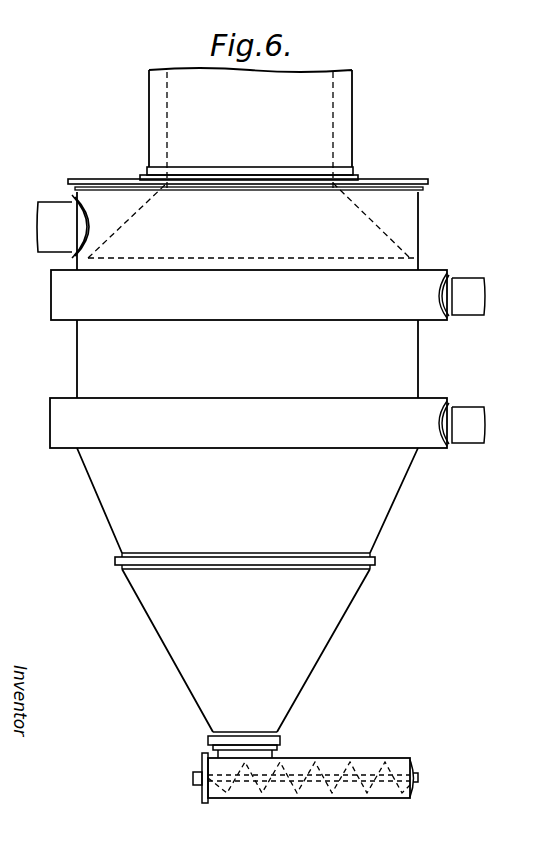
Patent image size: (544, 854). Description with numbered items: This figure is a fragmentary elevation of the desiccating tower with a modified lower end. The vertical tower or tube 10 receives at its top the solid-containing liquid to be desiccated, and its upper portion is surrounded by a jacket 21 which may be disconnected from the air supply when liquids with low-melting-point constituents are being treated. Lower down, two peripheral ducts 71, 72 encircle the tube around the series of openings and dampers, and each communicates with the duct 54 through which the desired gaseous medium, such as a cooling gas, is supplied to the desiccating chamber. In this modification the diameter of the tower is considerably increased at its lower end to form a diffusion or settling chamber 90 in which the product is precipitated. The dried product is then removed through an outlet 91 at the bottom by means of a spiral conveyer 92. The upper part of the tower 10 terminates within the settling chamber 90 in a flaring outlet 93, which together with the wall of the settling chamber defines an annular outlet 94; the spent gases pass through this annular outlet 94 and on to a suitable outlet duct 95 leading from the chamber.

The tower or tube 10 is at (300, 127).
The jacket 21 is at (337, 155).
The duct 54 is at (462, 297).
The peripheral duct 71 is at (63, 296).
The peripheral duct 72 is at (62, 423).
The diffusion or settling chamber 90 is at (408, 382).
The outlet 91 is at (263, 757).
The spiral conveyer 92 is at (400, 770).
The flaring outlet 93 is at (390, 240).
The annular outlet 94 is at (418, 260).
The outlet duct 95 is at (50, 227).